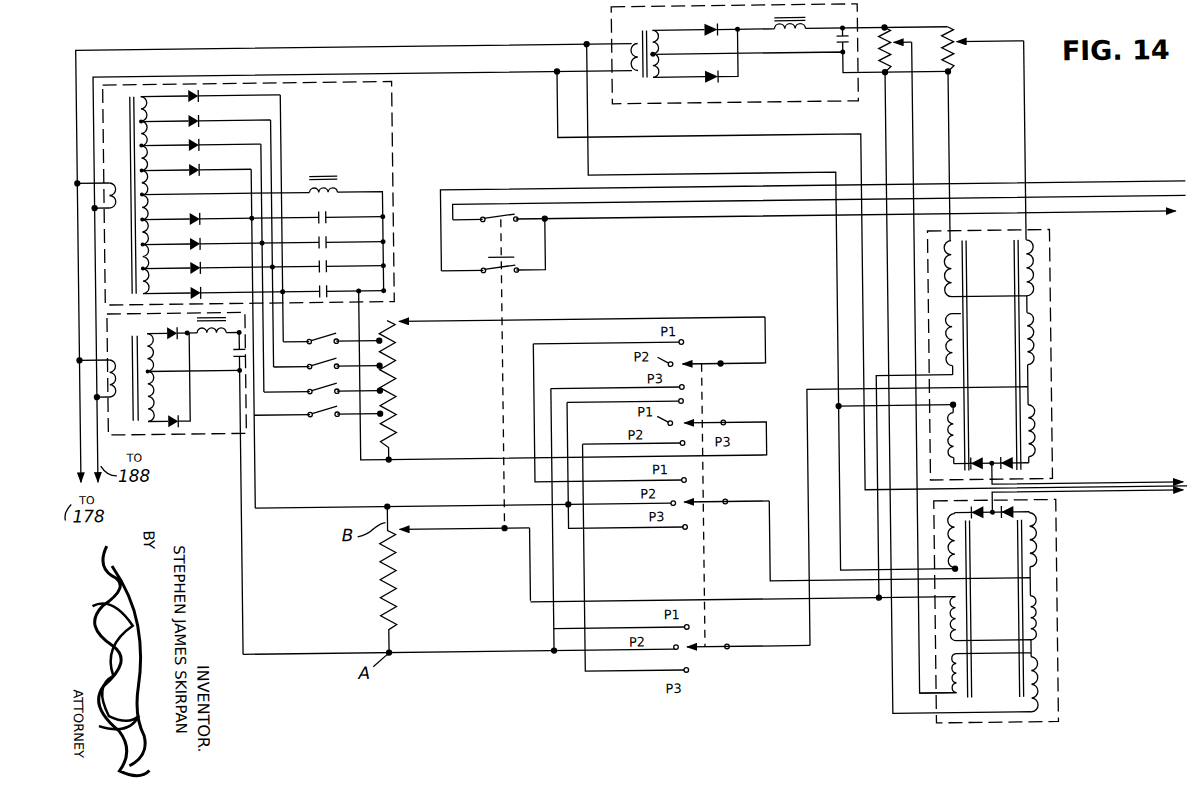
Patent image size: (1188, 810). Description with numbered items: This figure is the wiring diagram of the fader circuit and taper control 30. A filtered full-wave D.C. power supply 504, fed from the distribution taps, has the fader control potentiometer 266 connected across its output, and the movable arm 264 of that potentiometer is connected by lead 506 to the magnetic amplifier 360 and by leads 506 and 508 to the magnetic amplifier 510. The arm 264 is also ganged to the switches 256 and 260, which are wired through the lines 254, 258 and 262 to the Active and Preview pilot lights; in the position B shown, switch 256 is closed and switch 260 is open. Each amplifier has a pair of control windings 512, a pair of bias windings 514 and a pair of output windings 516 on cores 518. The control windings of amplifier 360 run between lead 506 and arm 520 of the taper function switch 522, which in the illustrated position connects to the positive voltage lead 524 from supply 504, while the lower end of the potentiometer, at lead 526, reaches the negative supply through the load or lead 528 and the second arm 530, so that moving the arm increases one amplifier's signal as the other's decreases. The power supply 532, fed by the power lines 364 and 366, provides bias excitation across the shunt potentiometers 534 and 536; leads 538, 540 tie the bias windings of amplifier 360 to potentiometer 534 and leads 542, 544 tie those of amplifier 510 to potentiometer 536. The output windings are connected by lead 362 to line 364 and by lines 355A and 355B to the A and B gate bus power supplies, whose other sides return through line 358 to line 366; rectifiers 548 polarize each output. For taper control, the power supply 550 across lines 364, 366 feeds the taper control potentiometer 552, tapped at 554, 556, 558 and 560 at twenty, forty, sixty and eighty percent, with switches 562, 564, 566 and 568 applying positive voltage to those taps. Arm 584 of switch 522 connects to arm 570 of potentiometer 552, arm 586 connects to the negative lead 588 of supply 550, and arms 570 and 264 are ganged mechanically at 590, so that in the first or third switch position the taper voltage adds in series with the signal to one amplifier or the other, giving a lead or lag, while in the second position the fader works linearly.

The fader taper control circuit 30 is at (302, 42).
The power line 364 is at (388, 49).
The power line 366 is at (449, 75).
The filtered full-wave D.C. power supply 550 is at (398, 146).
The filtered full-wave D.C. power supply 504 is at (168, 432).
The switch 562 is at (323, 335).
The switch 564 is at (317, 358).
The switch 566 is at (312, 384).
The switch 568 is at (322, 418).
The taper control potentiometer 552 is at (399, 384).
The tap 554 is at (393, 339).
The tap 556 is at (396, 363).
The tap 558 is at (396, 405).
The tap 560 is at (396, 423).
The arm of taper control 570 is at (444, 306).
The negative lead 588 is at (436, 454).
The movable arm 264 is at (428, 540).
The fader control potentiometer 266 is at (379, 567).
The positive voltage lead 524 is at (467, 489).
The lead 526 is at (457, 636).
The lead 506 is at (602, 604).
The line 258 is at (1098, 181).
The line 254 is at (1150, 176).
The line 262 is at (1122, 221).
The switch 256 is at (488, 225).
The switch 260 is at (496, 272).
The mechanical ganging 590 is at (505, 361).
The movable arm 584 is at (708, 357).
The movable arm 586 is at (707, 422).
The taper function switch 522 is at (782, 393).
The movable arm 520 is at (704, 501).
The second arm 530 is at (702, 645).
The negative signal lead 528 is at (808, 640).
The power supply 532 is at (863, 10).
The shunt potentiometer 534 is at (882, 58).
The shunt potentiometer 536 is at (954, 68).
The lead 542 is at (952, 96).
The lead 544 is at (1028, 128).
The lead 538 is at (890, 683).
The lead 540 is at (914, 700).
The lead 362 is at (839, 563).
The lead 508 is at (874, 386).
The magnetic amplifier 510 is at (1018, 495).
The magnetic amplifier 360 is at (1058, 569).
The bias windings 514 is at (961, 278).
The control windings 512 is at (960, 342).
The output windings 516 is at (960, 421).
The cores 518 is at (966, 263).
The rectifiers 548 is at (996, 459).
The line 355B is at (1087, 471).
The line 355A is at (1140, 498).
The line 358 is at (1147, 483).